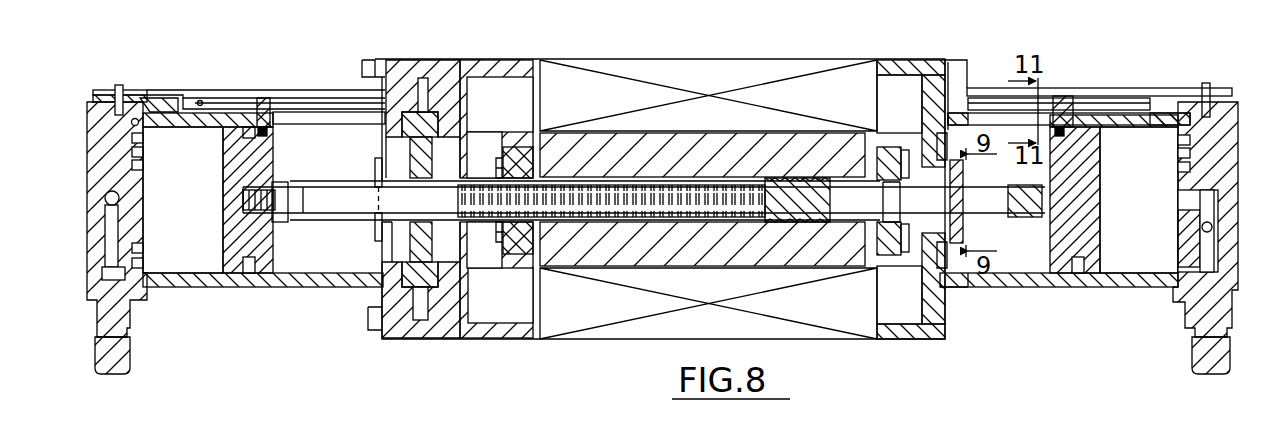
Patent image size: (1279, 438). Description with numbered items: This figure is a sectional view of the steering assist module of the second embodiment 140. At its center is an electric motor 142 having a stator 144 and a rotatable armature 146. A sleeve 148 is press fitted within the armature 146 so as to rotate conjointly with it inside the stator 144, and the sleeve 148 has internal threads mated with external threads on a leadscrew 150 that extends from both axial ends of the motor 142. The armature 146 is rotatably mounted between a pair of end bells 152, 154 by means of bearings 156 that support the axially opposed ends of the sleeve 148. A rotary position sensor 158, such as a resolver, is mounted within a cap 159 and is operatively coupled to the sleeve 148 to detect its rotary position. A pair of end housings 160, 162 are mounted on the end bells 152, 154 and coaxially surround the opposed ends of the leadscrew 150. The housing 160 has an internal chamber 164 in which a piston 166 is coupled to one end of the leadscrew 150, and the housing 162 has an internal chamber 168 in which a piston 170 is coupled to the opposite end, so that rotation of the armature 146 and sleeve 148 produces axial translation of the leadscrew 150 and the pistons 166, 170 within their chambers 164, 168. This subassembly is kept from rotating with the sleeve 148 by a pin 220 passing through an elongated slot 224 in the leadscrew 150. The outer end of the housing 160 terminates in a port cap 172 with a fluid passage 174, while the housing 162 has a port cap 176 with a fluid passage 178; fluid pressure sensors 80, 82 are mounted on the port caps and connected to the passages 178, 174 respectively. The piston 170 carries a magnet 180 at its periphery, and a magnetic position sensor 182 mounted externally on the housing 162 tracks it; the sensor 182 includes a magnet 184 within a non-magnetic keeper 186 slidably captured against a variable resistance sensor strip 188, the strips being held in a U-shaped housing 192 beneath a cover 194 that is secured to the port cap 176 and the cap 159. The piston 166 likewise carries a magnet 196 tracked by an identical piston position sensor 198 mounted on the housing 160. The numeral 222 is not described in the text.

The fluid pressure sensor 80 is at (130, 357).
The fluid pressure sensor 82 is at (1197, 356).
The second embodiment 140 is at (945, 47).
The electric motor 142 is at (606, 56).
The stator 144 is at (684, 65).
The rotatable armature 146 is at (692, 140).
The sleeve 148 is at (801, 176).
The leadscrew 150 is at (353, 204).
The end bell 152 is at (932, 76).
The end bell 154 is at (490, 61).
The bearing 156 is at (513, 146).
The rotary position sensor 158 is at (508, 258).
The cap 159 is at (416, 61).
The end housing 160 is at (1054, 288).
The end housing 162 is at (300, 286).
The internal chamber 164 is at (1128, 129).
The piston 166 is at (1096, 286).
The internal chamber 168 is at (205, 270).
The piston 170 is at (258, 261).
The port cap 172 is at (1206, 168).
The fluid passage 174 is at (1184, 240).
The port cap 176 is at (88, 157).
The fluid passage 178 is at (116, 222).
The magnet 180 is at (273, 132).
The magnetic position sensor 182 is at (182, 84).
The magnet 184 is at (265, 100).
The non-magnetic keeper 186 is at (270, 95).
The sensor strip 188 is at (202, 97).
The U-shaped housing 192 is at (210, 127).
The cover 194 is at (378, 59).
The magnet 196 is at (1068, 125).
The piston position sensor 198 is at (1048, 86).
The pin 220 is at (957, 176).
The base 222 is at (958, 287).
The elongated slot 224 is at (994, 216).